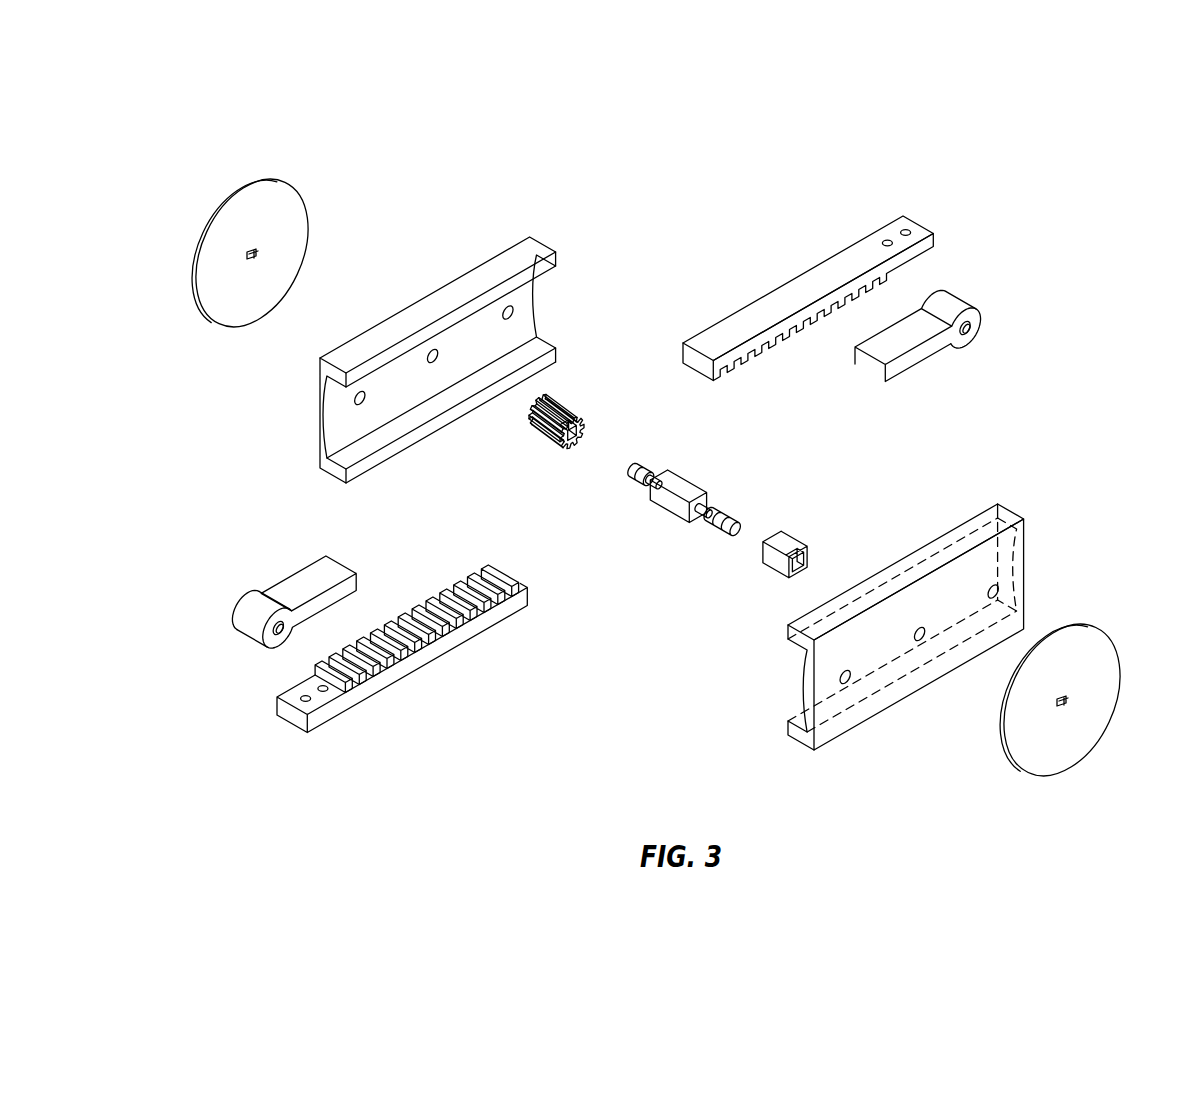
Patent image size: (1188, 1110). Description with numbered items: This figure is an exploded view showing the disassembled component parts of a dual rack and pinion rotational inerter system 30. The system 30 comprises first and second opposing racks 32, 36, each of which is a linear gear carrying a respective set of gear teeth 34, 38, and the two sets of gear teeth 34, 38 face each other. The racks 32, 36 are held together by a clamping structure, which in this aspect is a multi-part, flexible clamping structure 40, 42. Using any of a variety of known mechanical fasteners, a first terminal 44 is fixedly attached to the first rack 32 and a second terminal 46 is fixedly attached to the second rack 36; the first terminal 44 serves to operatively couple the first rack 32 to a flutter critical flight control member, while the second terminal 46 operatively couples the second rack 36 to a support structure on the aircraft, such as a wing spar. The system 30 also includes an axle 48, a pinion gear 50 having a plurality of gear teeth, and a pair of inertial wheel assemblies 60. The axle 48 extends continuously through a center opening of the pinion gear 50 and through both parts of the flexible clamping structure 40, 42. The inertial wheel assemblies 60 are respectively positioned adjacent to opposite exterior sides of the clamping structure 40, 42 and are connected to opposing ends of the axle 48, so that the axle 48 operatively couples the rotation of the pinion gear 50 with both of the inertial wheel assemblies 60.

The dual rack and pinion rotational inerter system 30 is at (832, 120).
The first rack 32 is at (808, 329).
The gear teeth 34 is at (806, 358).
The second rack 36 is at (402, 631).
The gear teeth 38 is at (417, 585).
The flexible clamping structure 40 is at (482, 268).
The flexible clamping structure 42 is at (1013, 512).
The first terminal 44 is at (953, 300).
The second terminal 46 is at (240, 597).
The axle 48 is at (693, 487).
The pinion gear 50 is at (535, 447).
The inertial wheel assemblies 60 is at (313, 178).